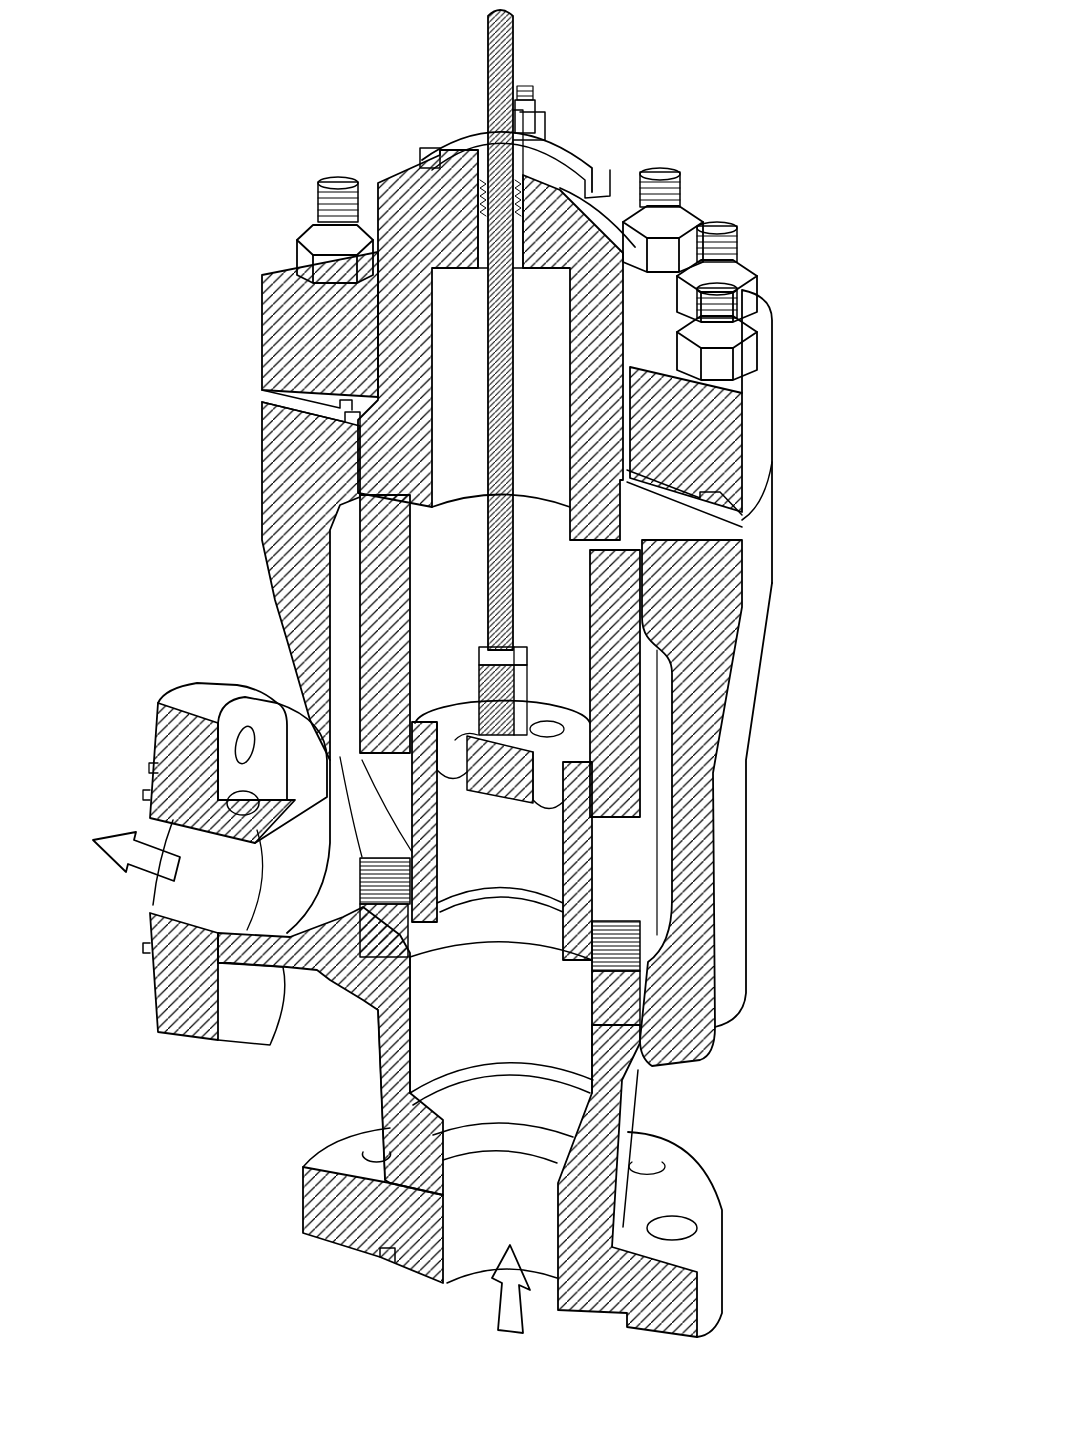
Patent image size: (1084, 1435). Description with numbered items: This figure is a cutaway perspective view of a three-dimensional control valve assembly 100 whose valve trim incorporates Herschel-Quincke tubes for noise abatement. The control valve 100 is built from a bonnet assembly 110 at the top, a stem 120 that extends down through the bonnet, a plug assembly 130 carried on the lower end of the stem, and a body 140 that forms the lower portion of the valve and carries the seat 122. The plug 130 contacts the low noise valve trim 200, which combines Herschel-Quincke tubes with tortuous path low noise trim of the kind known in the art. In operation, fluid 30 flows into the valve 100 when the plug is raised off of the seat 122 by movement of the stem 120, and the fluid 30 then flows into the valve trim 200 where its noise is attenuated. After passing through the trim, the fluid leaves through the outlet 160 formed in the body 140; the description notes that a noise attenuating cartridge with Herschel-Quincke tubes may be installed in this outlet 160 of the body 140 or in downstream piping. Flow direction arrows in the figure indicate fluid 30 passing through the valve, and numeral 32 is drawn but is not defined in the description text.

The control valve assembly 100 is at (766, 122).
The bonnet assembly 110 is at (280, 265).
The stem 120 is at (486, 38).
The seat 122 is at (378, 1017).
The plug assembly 130 is at (410, 793).
The body 140 is at (381, 1070).
The outlet 160 is at (501, 1086).
The low noise valve trim 200 is at (645, 934).
The fluid 30 is at (123, 867).
The inlet flow direction 32 is at (500, 1307).